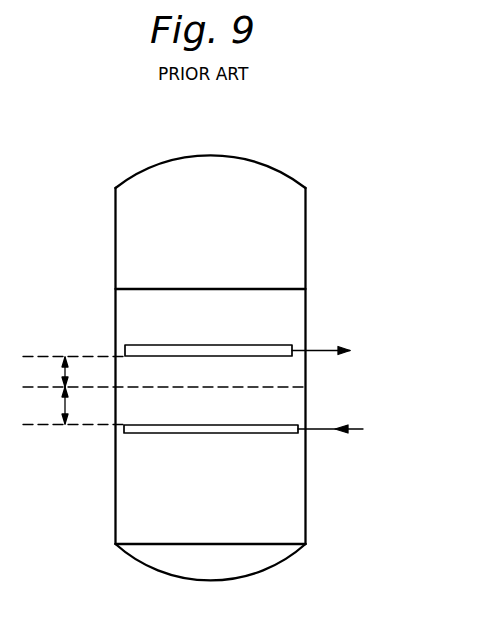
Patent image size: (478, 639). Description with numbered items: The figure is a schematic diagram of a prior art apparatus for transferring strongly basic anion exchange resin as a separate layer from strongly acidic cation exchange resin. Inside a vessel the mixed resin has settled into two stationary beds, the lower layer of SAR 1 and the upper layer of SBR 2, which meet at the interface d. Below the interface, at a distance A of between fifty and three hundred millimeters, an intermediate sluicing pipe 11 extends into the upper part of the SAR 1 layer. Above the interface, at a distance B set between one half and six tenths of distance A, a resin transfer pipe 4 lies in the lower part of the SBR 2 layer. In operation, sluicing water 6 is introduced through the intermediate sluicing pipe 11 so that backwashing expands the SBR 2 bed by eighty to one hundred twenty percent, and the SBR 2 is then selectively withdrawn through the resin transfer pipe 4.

The SAR 1 is at (216, 495).
The SBR 2 is at (204, 328).
The resin transfer pipe 4 is at (283, 345).
The sluicing water 6 is at (356, 428).
The intermediate sluicing pipe 11 is at (126, 428).
The interface d is at (306, 387).
The distance A is at (53, 405).
The distance B is at (53, 372).